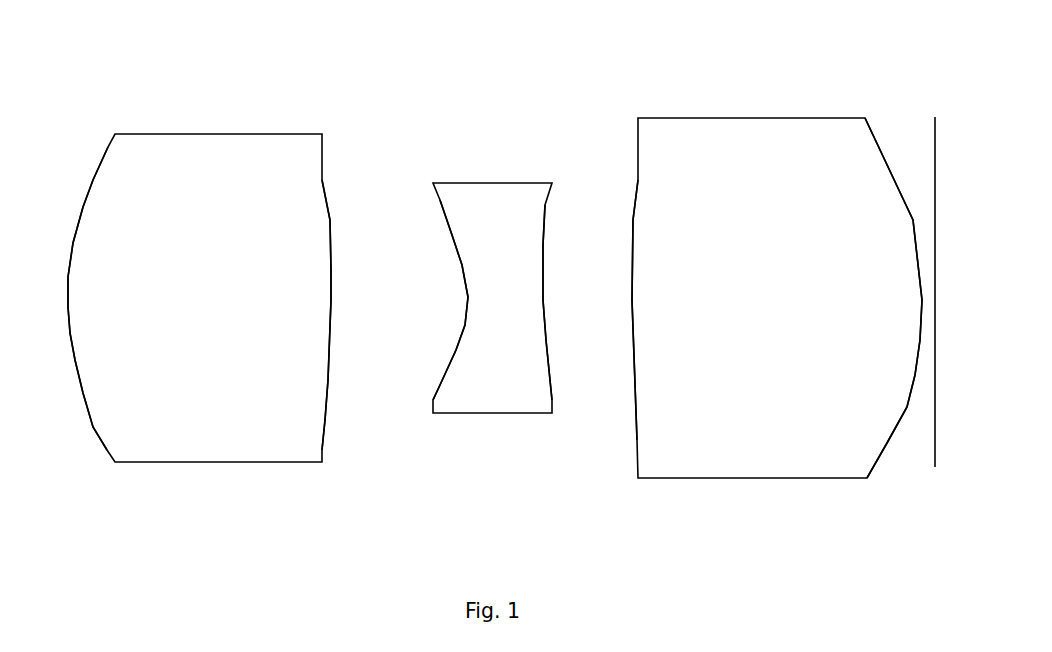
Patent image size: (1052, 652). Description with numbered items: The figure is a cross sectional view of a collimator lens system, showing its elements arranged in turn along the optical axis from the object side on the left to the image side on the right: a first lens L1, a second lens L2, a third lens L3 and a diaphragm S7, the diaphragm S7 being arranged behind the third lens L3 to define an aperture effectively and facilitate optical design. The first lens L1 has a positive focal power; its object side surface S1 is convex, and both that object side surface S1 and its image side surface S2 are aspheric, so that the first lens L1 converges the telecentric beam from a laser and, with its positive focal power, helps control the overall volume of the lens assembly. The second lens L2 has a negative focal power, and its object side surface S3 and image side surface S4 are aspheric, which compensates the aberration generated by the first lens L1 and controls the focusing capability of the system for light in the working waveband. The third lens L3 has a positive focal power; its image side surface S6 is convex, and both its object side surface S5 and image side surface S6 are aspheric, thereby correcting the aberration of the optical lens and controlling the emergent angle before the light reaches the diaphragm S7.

The first lens L1 is at (185, 127).
The second lens L2 is at (488, 177).
The third lens L3 is at (737, 112).
The object side surface of the first lens S1 is at (92, 430).
The image side surface of the first lens S2 is at (326, 430).
The object side surface of the second lens S3 is at (458, 332).
The image side surface of the second lens S4 is at (545, 332).
The object side surface of the third lens S5 is at (632, 425).
The image side surface of the third lens S6 is at (888, 443).
The diaphragm S7 is at (935, 127).